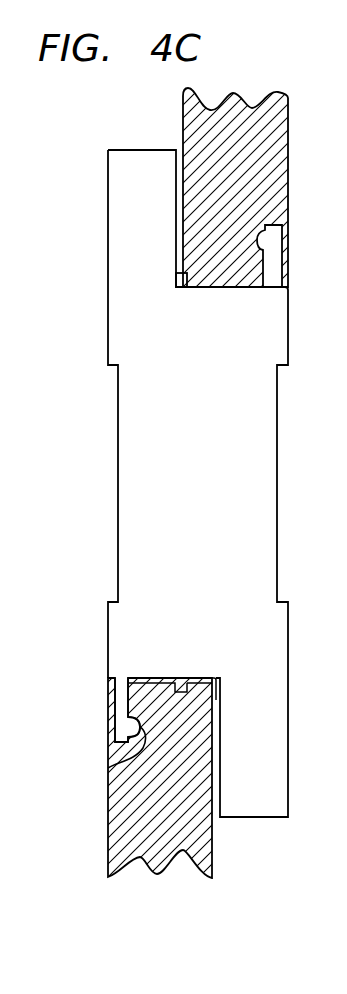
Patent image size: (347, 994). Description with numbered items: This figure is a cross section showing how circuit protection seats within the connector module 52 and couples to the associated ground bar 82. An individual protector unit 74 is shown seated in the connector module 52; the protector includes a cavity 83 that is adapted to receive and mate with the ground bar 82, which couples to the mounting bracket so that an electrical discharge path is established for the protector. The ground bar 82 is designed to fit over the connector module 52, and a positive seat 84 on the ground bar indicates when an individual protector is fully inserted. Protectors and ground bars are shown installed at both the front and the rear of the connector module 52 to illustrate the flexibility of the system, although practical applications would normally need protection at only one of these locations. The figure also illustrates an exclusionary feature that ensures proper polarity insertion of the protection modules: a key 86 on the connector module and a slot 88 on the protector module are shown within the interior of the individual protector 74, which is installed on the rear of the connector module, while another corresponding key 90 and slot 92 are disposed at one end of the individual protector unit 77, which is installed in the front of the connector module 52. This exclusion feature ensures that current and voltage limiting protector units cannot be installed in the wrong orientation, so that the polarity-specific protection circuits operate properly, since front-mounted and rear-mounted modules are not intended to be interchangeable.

The connector module 52 is at (277, 462).
The individual protector unit 77 is at (250, 104).
The key 90 is at (177, 289).
The slot 92 is at (188, 288).
The individual protector unit 74 is at (183, 853).
The ground bar 82 is at (122, 683).
The cavity 83 is at (118, 718).
The positive seat 84 is at (108, 768).
The key 86 is at (177, 678).
The slot 88 is at (188, 678).